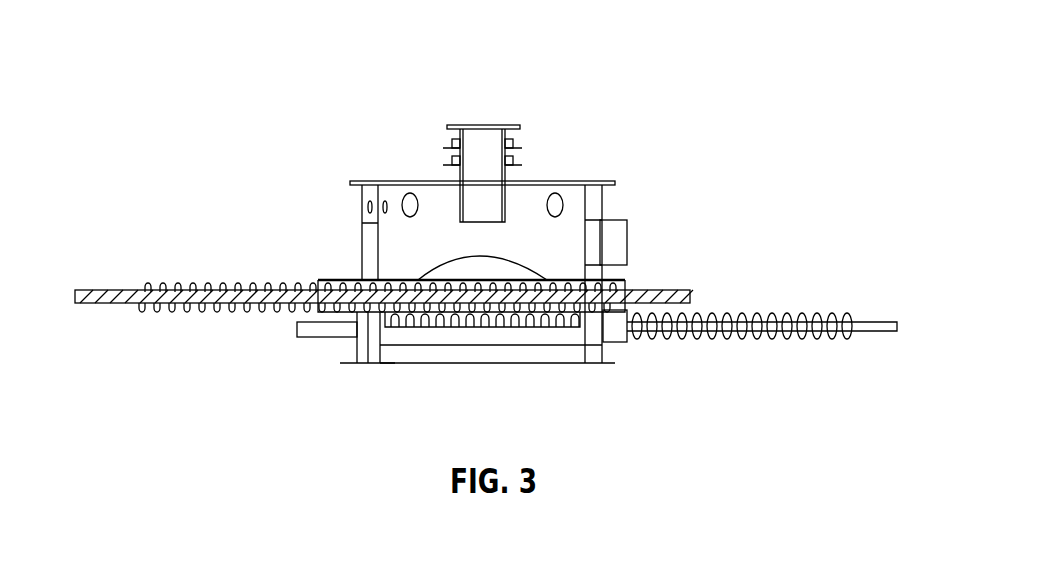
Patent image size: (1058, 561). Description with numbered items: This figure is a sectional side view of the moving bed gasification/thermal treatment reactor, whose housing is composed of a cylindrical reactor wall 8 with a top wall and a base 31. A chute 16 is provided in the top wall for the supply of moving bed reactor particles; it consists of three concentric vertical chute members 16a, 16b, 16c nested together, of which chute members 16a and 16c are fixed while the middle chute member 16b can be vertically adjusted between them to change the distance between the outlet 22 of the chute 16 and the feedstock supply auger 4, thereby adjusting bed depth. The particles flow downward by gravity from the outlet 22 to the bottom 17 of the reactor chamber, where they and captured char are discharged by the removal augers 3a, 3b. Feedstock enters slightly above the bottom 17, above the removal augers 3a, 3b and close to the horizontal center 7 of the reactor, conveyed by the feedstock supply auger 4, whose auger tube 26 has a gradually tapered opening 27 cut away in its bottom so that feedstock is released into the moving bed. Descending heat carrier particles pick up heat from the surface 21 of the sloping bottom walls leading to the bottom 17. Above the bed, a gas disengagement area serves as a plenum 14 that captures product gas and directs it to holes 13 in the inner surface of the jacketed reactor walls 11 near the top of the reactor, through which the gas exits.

The removal auger 3a is at (753, 330).
The removal auger 3b is at (720, 315).
The feedstock supply auger 4 is at (287, 287).
The horizontal center 7 is at (522, 310).
The reactor wall 8 is at (373, 183).
The jacketed reactor walls 11 is at (360, 263).
The holes 13 is at (562, 192).
The plenum 14 is at (442, 247).
The chute 16 is at (508, 200).
The chute member 16a is at (517, 126).
The middle chute member 16b is at (522, 140).
The chute member 16c is at (512, 163).
The bottom 17 is at (483, 346).
The surface 21 is at (487, 268).
The outlet 22 is at (442, 127).
The auger tube 26 is at (398, 280).
The tapered opening 27 is at (428, 311).
The base 31 is at (387, 365).